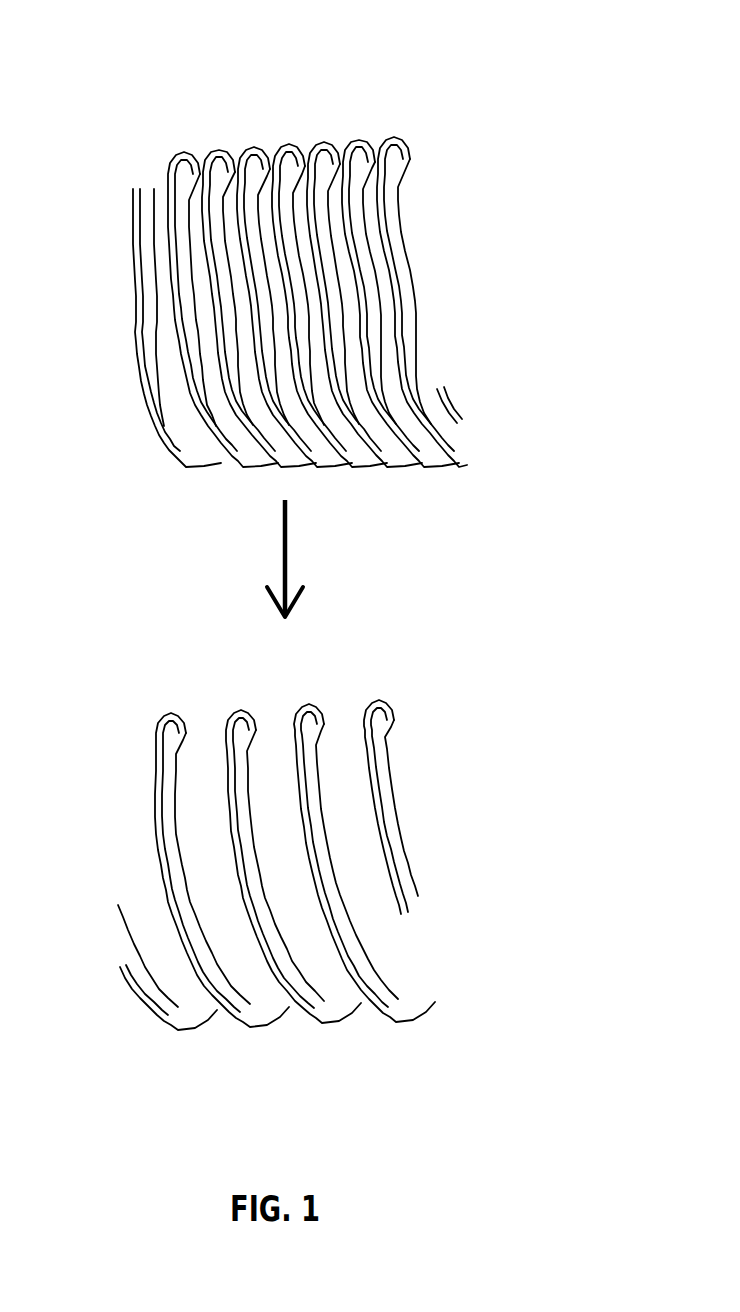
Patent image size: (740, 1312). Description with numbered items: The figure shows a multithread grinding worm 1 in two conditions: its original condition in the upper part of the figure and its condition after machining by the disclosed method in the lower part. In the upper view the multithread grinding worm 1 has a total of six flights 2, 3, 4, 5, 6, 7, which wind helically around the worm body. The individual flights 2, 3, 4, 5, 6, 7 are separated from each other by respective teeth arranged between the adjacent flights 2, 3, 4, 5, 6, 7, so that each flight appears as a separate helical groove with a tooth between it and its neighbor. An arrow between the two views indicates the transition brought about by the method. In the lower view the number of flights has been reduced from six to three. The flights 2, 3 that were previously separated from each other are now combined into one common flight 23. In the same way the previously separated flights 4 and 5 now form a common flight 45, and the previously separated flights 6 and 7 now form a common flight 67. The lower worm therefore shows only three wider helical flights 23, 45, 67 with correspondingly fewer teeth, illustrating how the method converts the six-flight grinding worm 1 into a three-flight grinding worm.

The multithread grinding worm 1 is at (245, 520).
The flight 2 is at (202, 172).
The flight 3 is at (237, 170).
The flight 4 is at (271, 170).
The flight 5 is at (304, 168).
The flight 6 is at (338, 168).
The flight 7 is at (376, 167).
The common flight 23 is at (207, 733).
The common flight 45 is at (277, 733).
The common flight 67 is at (343, 733).